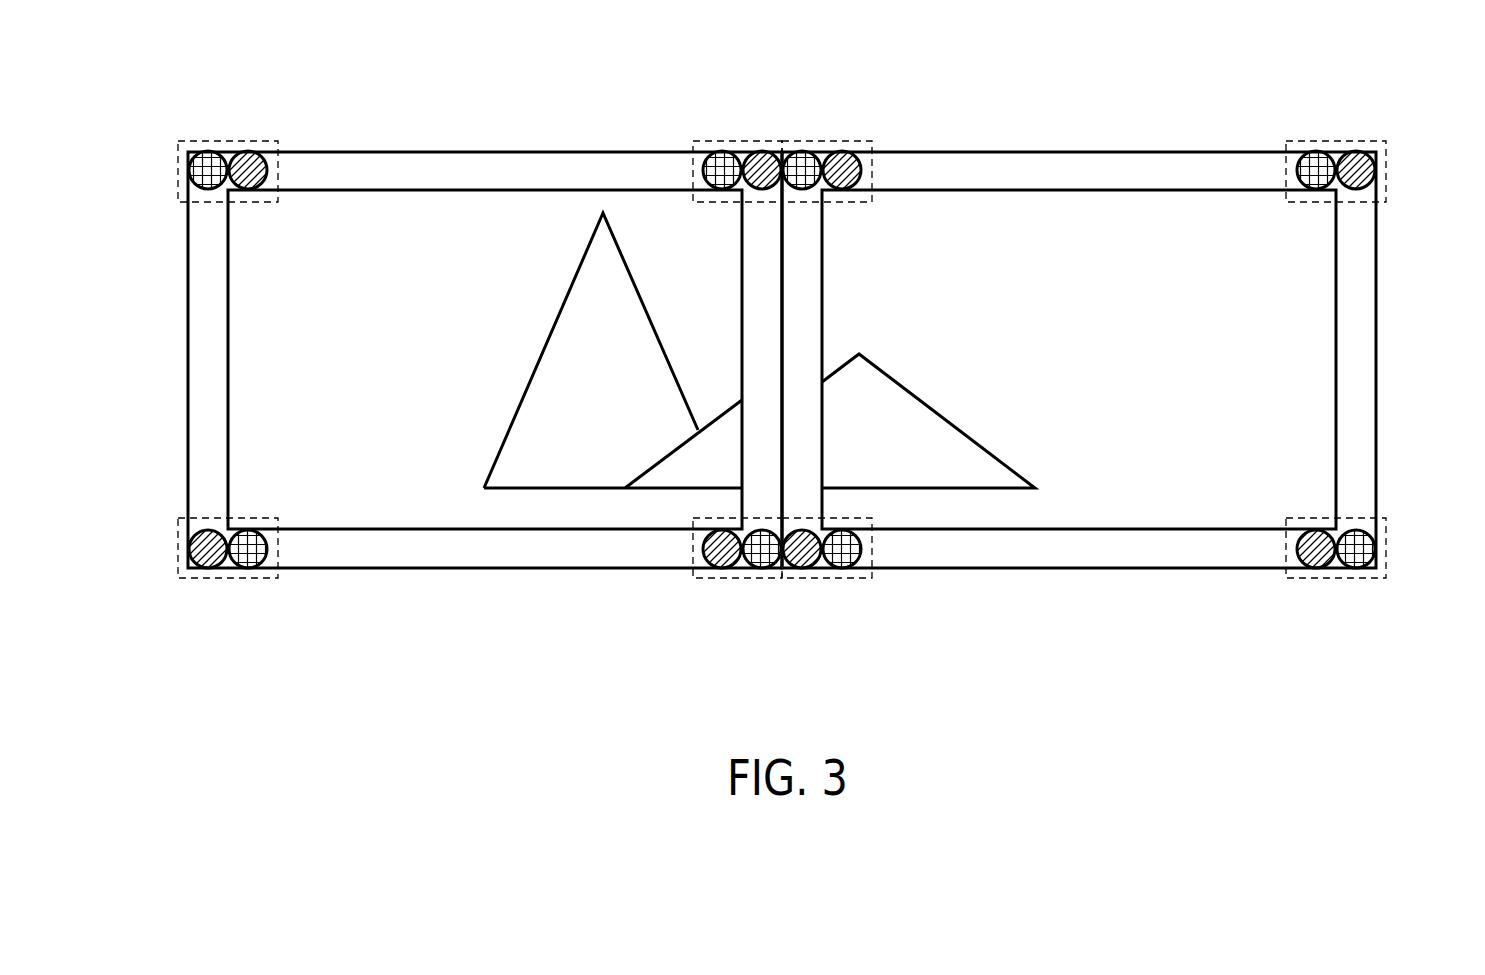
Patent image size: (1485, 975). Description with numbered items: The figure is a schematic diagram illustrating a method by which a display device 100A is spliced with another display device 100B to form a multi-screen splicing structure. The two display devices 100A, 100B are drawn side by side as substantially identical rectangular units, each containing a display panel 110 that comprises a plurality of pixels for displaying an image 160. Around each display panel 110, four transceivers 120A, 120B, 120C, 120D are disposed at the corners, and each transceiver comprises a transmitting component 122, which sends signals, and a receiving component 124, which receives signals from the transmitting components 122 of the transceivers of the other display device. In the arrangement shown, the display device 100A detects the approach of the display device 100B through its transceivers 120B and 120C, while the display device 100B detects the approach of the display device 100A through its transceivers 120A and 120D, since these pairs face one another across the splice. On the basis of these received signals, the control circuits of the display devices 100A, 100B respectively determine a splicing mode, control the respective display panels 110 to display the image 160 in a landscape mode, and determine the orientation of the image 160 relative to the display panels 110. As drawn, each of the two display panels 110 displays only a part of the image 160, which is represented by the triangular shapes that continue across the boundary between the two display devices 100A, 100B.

The display device 100A is at (480, 90).
The display device 100B is at (1126, 90).
The display panel 110 is at (315, 264).
The transceiver 120A is at (176, 163).
The transceiver 120B is at (693, 141).
The transceiver 120C is at (693, 578).
The transceiver 120D is at (176, 552).
The transmitting component 122 is at (254, 160).
The receiving component 124 is at (212, 160).
The image 160 is at (549, 334).